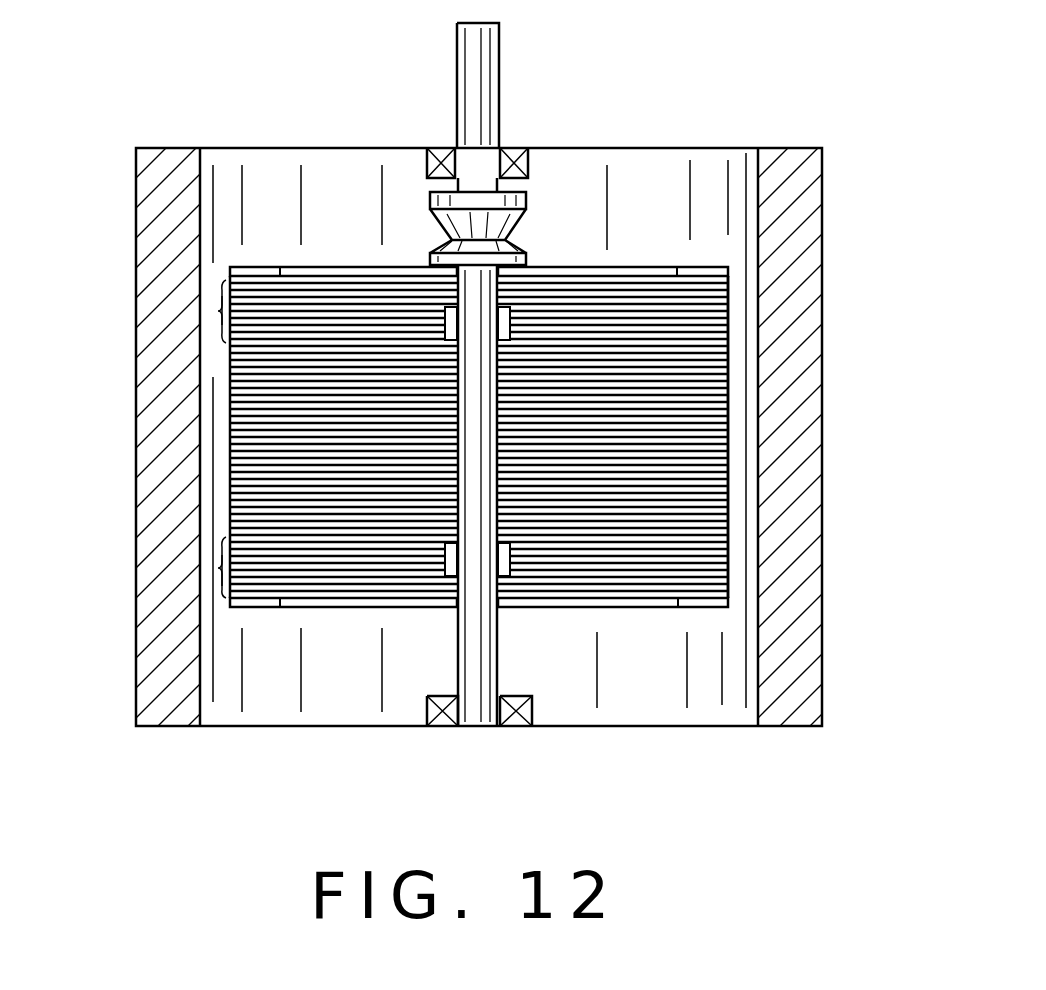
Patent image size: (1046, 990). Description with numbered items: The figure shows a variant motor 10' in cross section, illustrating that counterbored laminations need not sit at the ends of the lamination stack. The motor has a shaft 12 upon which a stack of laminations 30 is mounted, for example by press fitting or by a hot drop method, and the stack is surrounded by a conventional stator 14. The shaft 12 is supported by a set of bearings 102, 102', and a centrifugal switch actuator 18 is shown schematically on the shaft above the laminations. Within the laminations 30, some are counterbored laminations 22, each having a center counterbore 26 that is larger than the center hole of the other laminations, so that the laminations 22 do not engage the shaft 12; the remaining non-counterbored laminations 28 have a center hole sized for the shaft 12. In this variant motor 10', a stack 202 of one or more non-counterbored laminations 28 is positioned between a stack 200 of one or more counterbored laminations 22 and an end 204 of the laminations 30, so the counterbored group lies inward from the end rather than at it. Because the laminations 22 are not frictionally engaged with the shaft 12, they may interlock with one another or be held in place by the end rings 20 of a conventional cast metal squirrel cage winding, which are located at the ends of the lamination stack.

The variant motor 10' is at (690, 75).
The shaft 12 is at (500, 70).
The stator 14 is at (780, 448).
The centrifugal switch actuator 18 is at (527, 223).
The end rings 20 is at (288, 268).
The counterbored laminations 22 is at (728, 335).
The counterbore 26 is at (447, 313).
The non-counterbored laminations 28 is at (222, 390).
The laminations 30 is at (728, 390).
The bearing 102 is at (517, 136).
The bearing 102' is at (509, 740).
The stack of counterbored laminations 200 is at (222, 325).
The stack of non-counterbored laminations 202 is at (222, 296).
The end of laminations 204 is at (607, 276).